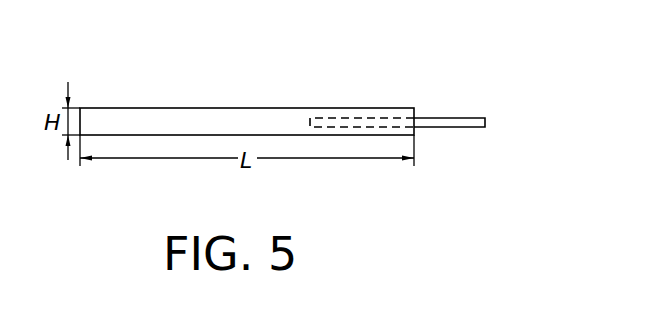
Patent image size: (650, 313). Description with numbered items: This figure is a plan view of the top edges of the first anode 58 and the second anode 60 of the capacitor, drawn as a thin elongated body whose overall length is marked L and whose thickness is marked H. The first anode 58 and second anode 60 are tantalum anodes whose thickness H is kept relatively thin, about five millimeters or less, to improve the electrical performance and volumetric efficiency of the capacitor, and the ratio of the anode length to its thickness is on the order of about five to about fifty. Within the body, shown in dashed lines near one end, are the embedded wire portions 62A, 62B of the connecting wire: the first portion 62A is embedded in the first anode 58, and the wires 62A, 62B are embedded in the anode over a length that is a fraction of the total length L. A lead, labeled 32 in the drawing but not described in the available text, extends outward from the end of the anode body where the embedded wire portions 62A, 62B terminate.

The first anode 58 is at (247, 83).
The second anode 60 is at (204, 98).
The first portion of connecting wire 62A is at (384, 78).
The wire 62B is at (350, 117).
The lead wire 32 is at (443, 119).